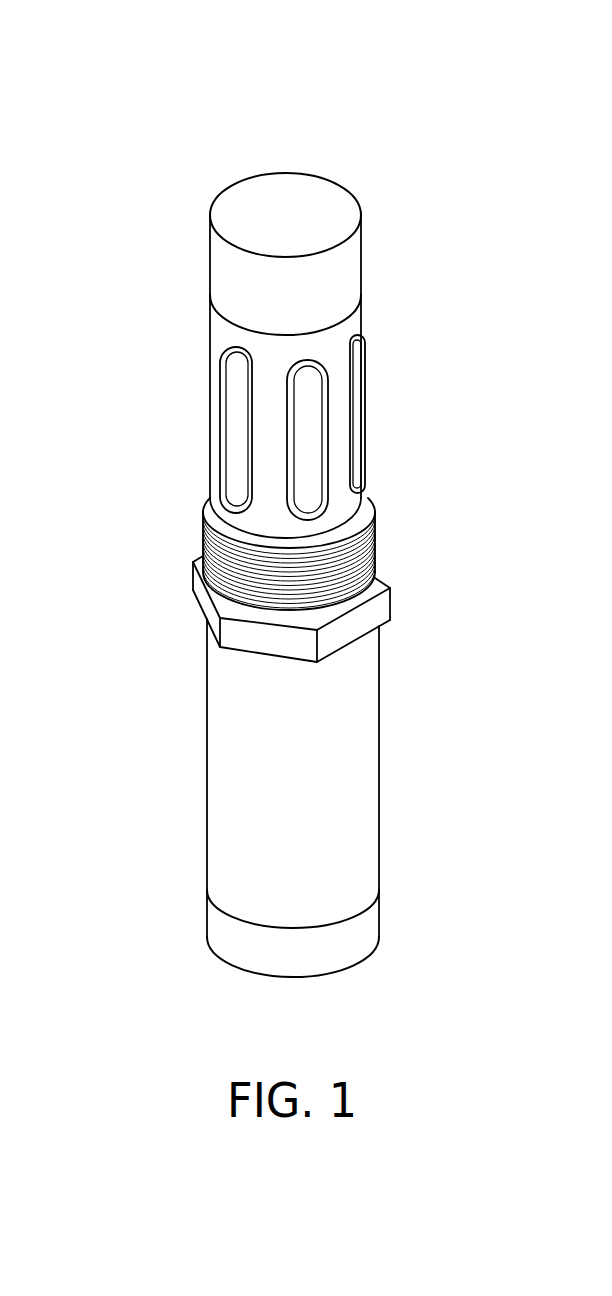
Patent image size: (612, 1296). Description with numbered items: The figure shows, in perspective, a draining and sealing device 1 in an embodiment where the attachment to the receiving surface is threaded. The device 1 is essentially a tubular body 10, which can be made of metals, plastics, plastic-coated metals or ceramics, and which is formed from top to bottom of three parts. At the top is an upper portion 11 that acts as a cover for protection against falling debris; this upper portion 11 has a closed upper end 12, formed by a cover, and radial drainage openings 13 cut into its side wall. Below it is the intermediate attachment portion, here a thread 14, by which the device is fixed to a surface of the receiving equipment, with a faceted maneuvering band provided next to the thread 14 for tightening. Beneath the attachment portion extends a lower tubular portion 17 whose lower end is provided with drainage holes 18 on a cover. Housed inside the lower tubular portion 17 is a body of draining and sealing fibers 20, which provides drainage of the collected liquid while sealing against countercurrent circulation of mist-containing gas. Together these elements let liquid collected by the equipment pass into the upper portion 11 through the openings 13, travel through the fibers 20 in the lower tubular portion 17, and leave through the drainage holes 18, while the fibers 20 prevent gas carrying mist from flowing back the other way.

The draining and sealing device 1 is at (387, 121).
The tubular body 10 is at (175, 579).
The upper portion 11 is at (212, 415).
The closed upper end 12 is at (263, 219).
The radial drainage openings 13 is at (220, 363).
The thread 14 is at (200, 523).
The lower tubular portion 17 is at (237, 716).
The drainage holes 18 is at (250, 968).
The body of draining and sealing fibers 20 is at (260, 797).